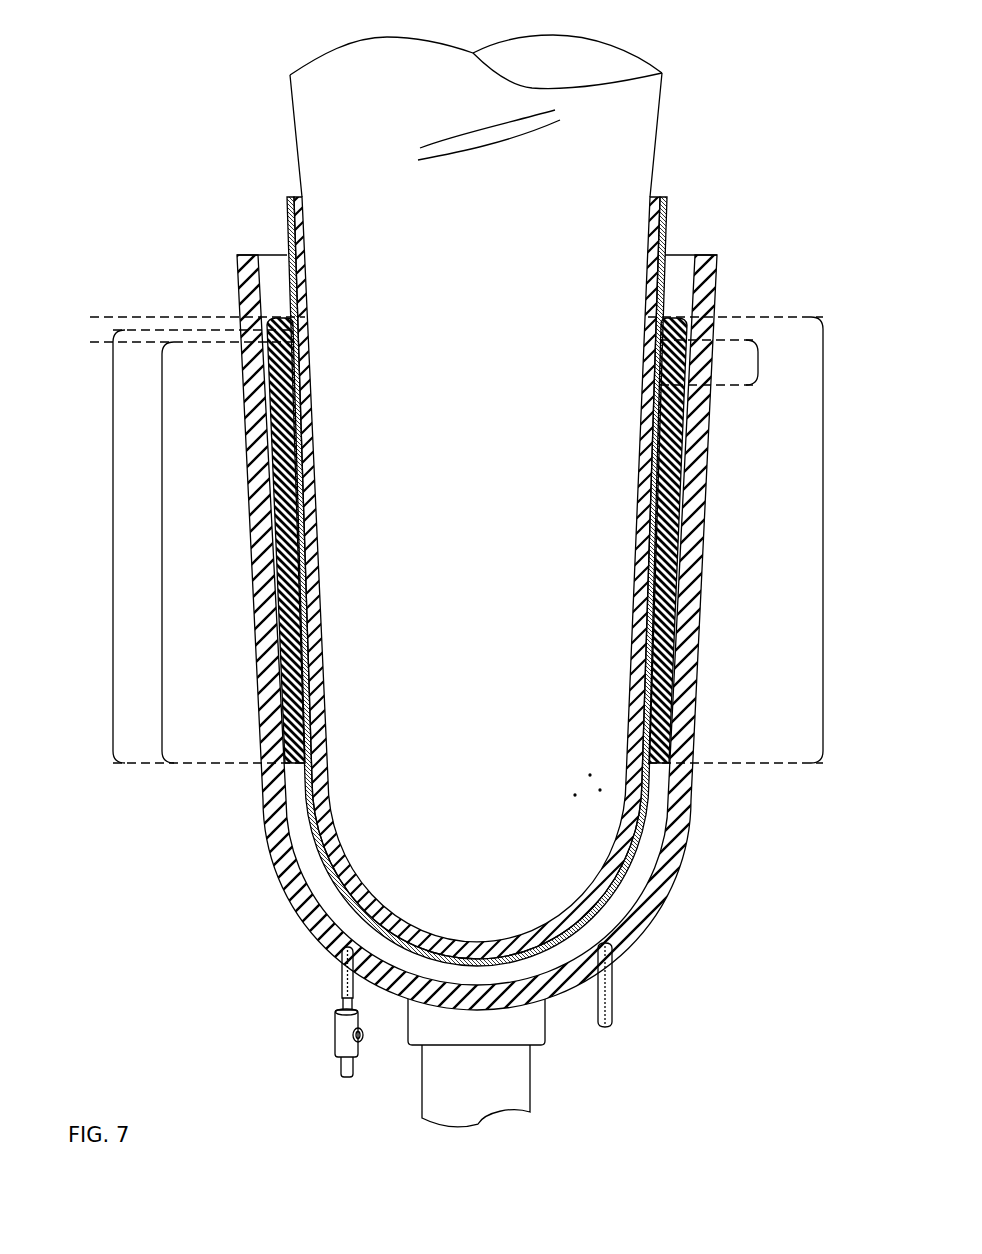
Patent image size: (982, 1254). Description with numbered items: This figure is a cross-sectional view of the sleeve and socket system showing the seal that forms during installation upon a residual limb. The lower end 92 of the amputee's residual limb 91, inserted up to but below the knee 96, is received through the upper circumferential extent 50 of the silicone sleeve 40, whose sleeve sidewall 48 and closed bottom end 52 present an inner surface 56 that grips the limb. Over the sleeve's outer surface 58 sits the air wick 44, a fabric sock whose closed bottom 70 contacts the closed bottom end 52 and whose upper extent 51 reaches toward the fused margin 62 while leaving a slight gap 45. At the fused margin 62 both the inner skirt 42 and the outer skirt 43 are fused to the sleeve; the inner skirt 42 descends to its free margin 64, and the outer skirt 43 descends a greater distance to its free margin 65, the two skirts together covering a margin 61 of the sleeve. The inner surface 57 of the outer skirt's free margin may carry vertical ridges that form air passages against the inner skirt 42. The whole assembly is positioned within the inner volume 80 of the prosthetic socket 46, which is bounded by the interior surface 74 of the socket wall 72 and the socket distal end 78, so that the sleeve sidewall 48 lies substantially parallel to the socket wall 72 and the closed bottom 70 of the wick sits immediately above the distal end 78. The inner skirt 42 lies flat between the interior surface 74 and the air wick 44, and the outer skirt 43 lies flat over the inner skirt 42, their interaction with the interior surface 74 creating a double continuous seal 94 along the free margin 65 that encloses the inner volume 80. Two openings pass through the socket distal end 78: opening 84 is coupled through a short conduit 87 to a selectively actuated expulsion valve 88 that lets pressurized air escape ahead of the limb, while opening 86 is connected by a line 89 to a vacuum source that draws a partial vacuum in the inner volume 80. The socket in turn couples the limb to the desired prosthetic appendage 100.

The silicone sleeve 40 is at (494, 577).
The inner skirt 42 is at (276, 524).
The outer skirt 43 is at (258, 437).
The air wick 44 is at (660, 848).
The gap 45 is at (758, 352).
The prosthetic socket 46 is at (730, 280).
The sleeve sidewall 48 is at (494, 581).
The upper circumferential extent 50 is at (494, 562).
The upper extent 51 is at (282, 316).
The closed bottom end 52 is at (494, 562).
The inner surface 56 is at (534, 581).
The inner surface 57 is at (241, 564).
The outer surface 58 is at (494, 581).
The margin 61 is at (823, 540).
The fused margin 62 is at (90, 317).
The free margin 64 is at (162, 540).
The free margin 65 is at (113, 507).
The closed bottom 70 is at (494, 581).
The socket wall 72 is at (475, 632).
The interior surface 74 is at (475, 632).
The socket distal end 78 is at (558, 998).
The inner volume 80 is at (494, 620).
The opening 84 is at (335, 940).
The opening 86 is at (615, 955).
The short conduit 87 is at (337, 988).
The expulsion valve 88 is at (312, 1041).
The line 89 is at (640, 987).
The residual limb 91 is at (487, 405).
The lower end 92 is at (587, 777).
The double continuous seal 94 is at (182, 546).
The knee 96 is at (580, 148).
The prosthetic appendage 100 is at (410, 1085).